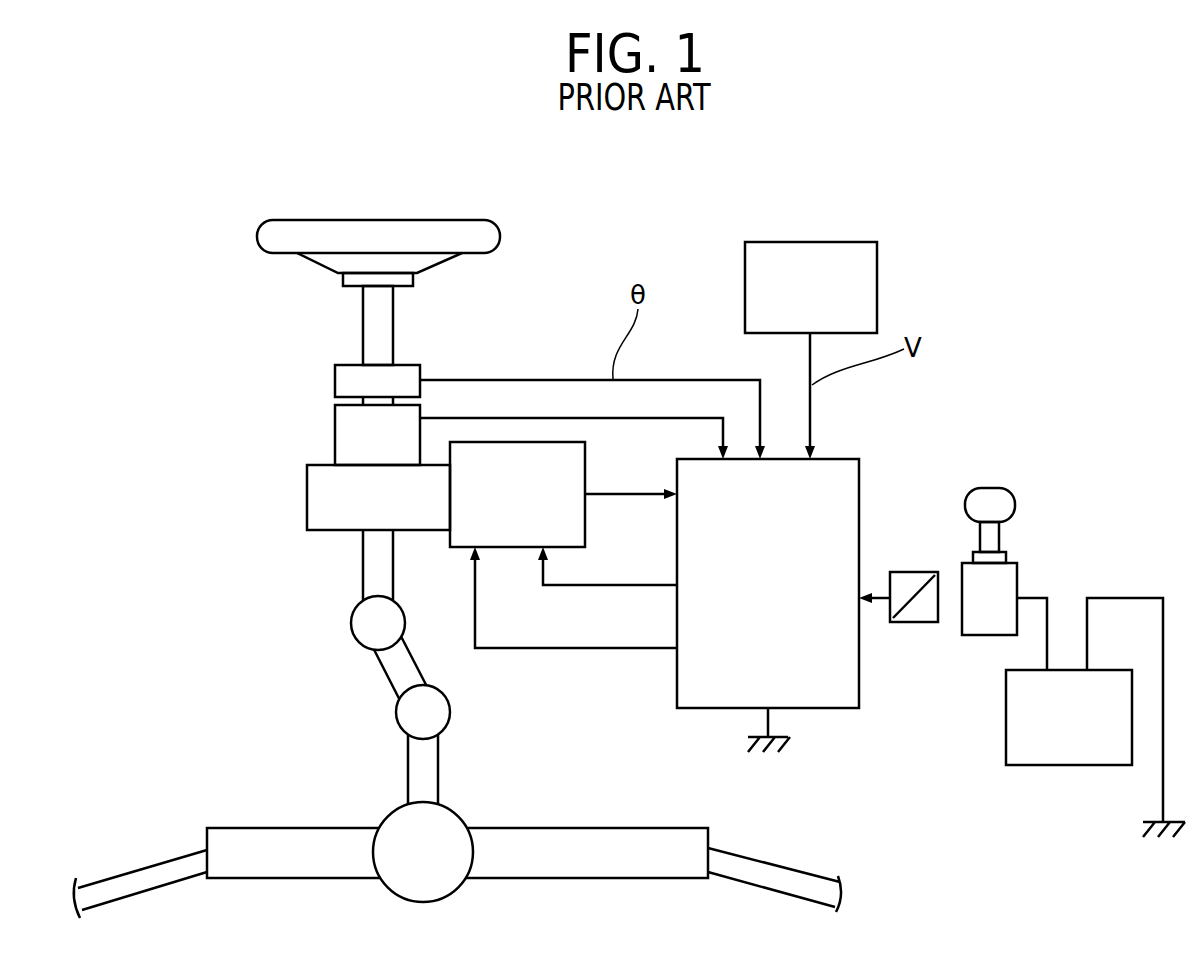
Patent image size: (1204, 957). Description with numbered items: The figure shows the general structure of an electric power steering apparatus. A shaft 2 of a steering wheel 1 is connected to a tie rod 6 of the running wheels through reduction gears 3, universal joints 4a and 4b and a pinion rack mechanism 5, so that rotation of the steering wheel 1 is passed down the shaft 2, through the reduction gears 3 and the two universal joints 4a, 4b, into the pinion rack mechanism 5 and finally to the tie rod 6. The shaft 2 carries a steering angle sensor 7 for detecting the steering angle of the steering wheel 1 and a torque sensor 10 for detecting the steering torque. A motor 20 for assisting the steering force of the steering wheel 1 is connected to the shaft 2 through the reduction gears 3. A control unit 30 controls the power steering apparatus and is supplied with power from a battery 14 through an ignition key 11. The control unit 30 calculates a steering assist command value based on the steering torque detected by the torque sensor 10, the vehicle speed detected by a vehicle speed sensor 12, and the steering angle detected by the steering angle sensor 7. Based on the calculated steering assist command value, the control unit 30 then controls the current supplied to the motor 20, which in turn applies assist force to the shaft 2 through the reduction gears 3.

The steering wheel 1 is at (487, 232).
The shaft 2 is at (363, 344).
The reduction gears 3 is at (307, 503).
The universal joint 4a is at (351, 620).
The universal joint 4b is at (397, 713).
The pinion rack mechanism 5 is at (471, 806).
The tie rod 6 is at (770, 871).
The steering angle sensor 7 is at (413, 364).
The torque sensor 10 is at (337, 433).
The ignition key 11 is at (1017, 500).
The vehicle speed sensor 12 is at (845, 242).
The battery 14 is at (1050, 753).
The motor 20 is at (587, 474).
The control unit 30 is at (848, 459).